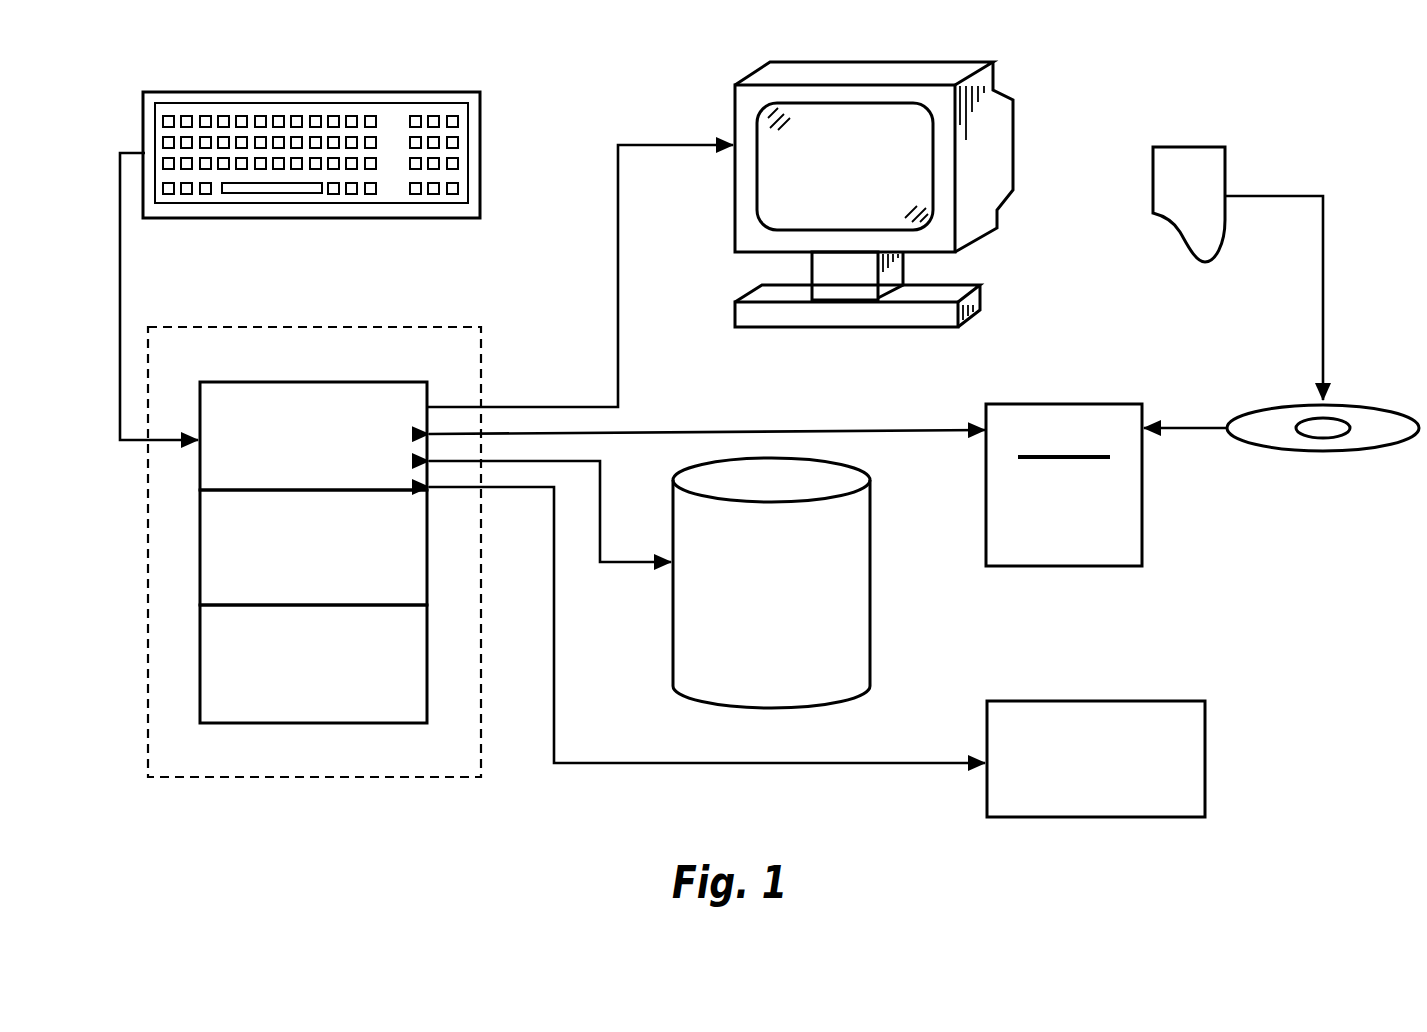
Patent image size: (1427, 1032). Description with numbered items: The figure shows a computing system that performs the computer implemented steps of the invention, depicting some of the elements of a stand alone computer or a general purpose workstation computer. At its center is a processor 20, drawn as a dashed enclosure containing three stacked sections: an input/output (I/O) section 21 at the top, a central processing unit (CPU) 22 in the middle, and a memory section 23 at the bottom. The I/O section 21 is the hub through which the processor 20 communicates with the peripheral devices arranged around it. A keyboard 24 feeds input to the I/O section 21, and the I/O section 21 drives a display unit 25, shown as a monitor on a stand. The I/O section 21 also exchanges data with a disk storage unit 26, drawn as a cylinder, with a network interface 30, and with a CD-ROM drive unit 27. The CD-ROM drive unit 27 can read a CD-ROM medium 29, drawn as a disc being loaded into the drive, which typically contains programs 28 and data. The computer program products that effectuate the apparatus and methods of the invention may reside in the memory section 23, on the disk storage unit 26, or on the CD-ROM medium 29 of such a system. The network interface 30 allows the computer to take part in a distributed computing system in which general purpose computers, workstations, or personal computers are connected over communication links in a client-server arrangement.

The processor 20 is at (432, 326).
The input/output (I/O) section 21 is at (292, 386).
The central processing unit (CPU) 22 is at (427, 588).
The memory section 23 is at (427, 704).
The keyboard 24 is at (460, 92).
The display unit 25 is at (942, 72).
The disk storage unit 26 is at (867, 558).
The CD-ROM drive unit 27 is at (1014, 403).
The programs 28 is at (1168, 157).
The CD-ROM medium 29 is at (1300, 408).
The network interface 30 is at (1138, 701).